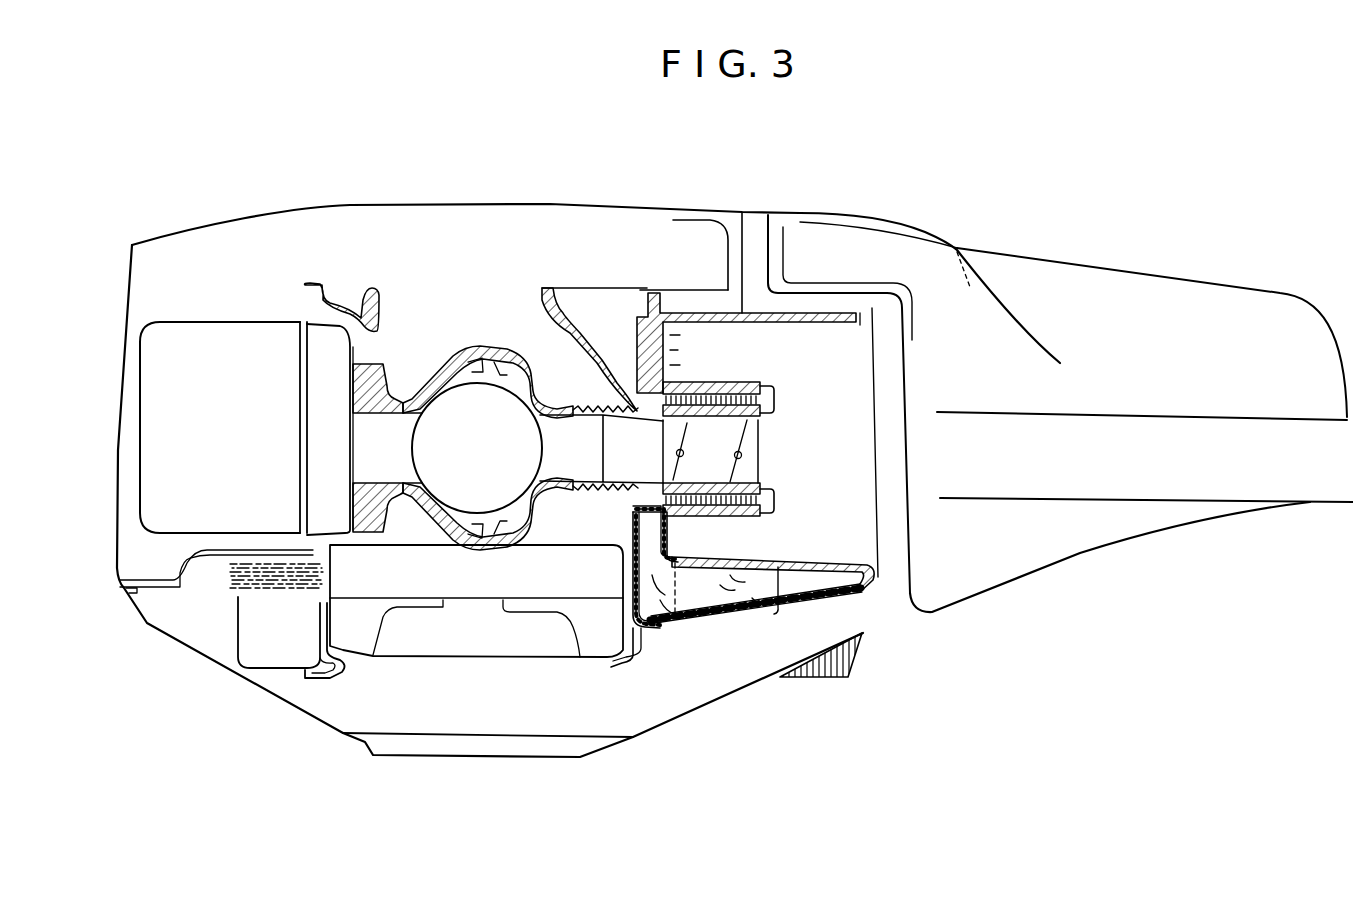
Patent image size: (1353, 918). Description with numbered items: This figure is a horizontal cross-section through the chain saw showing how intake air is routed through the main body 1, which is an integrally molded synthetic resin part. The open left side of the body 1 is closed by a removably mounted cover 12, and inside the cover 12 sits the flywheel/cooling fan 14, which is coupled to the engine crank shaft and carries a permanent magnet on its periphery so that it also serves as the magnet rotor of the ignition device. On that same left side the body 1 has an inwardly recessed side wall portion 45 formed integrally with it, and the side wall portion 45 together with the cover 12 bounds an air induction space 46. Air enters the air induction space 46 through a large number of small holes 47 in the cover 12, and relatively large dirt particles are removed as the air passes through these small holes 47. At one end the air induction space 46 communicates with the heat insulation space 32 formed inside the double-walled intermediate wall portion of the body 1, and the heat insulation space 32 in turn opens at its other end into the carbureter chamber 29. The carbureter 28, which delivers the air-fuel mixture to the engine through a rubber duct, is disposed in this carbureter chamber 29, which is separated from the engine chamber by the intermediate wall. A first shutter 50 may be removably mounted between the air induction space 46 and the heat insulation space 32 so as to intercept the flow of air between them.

The main body 1 is at (500, 200).
The cover 12 is at (302, 702).
The flywheel/cooling fan 14 is at (422, 607).
The carbureter 28 is at (757, 460).
The carbureter chamber 29 is at (753, 360).
The heat insulation space 32 is at (623, 540).
The side wall portion 45 is at (780, 610).
The air induction space 46 is at (747, 597).
The small holes 47 is at (832, 605).
The first shutter 50 is at (667, 618).